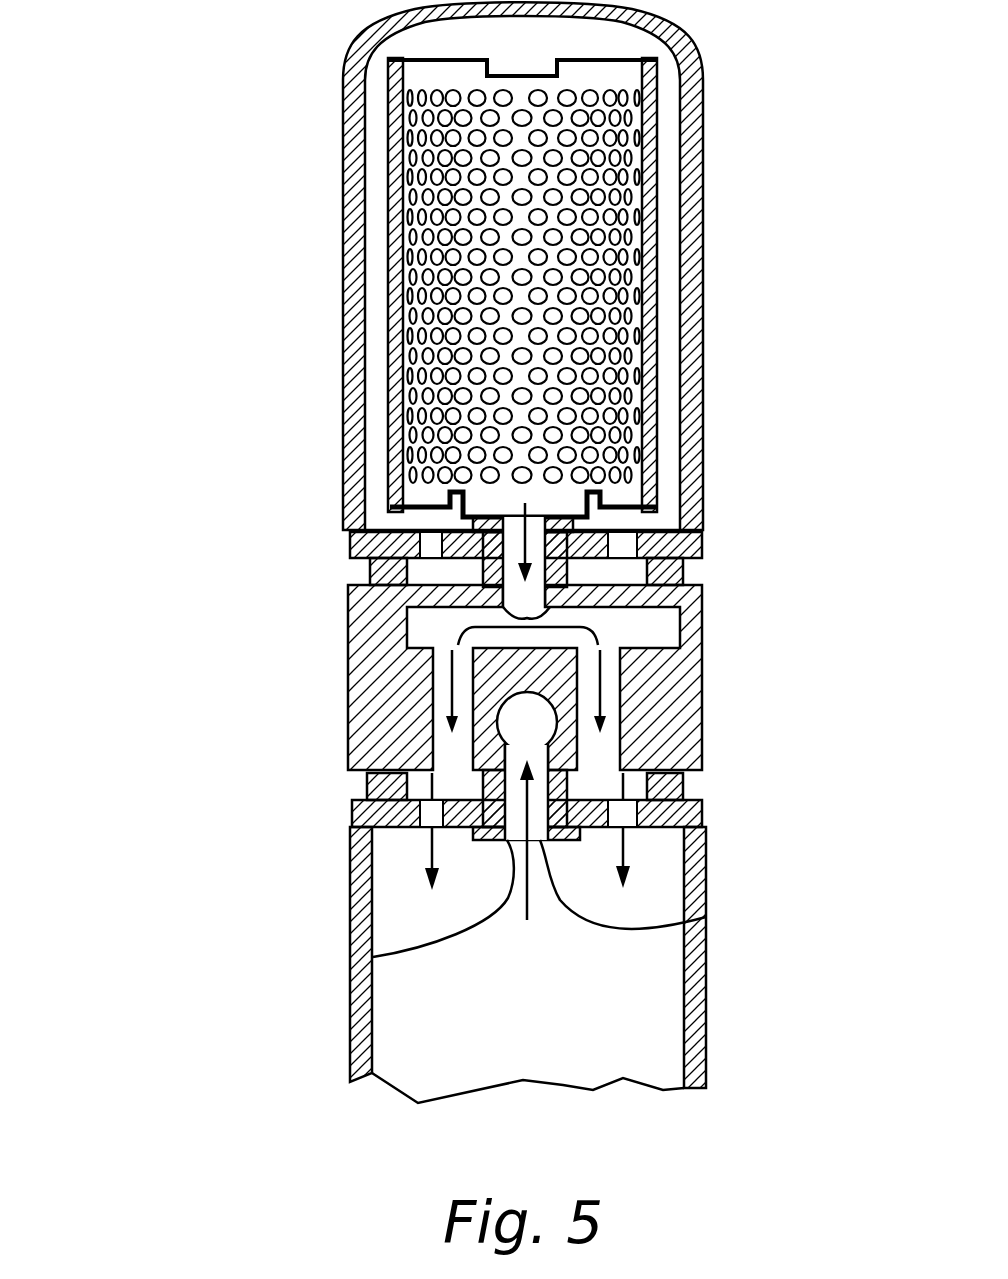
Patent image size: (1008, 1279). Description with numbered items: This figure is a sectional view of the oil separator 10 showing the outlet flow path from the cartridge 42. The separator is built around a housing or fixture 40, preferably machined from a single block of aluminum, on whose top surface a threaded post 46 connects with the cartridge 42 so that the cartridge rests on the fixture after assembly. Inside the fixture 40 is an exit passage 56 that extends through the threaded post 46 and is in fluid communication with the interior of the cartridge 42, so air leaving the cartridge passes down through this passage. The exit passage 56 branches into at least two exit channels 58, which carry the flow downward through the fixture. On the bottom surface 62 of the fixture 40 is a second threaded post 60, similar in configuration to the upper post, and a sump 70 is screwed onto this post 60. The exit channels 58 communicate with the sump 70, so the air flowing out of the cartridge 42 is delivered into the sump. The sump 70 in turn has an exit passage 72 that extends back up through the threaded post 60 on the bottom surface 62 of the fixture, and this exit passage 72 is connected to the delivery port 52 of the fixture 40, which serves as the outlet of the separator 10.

The oil separator 10 is at (152, 306).
The cartridge 42 is at (343, 171).
The threaded post 46 is at (547, 533).
The exit passage 56 is at (512, 535).
The fixture 40 is at (336, 615).
The exit channels 58 is at (443, 690).
The delivery port 52 is at (543, 733).
The bottom surface 62 is at (460, 817).
The threaded post 60 is at (373, 960).
The exit passage 72 is at (706, 916).
The sump 70 is at (706, 1043).